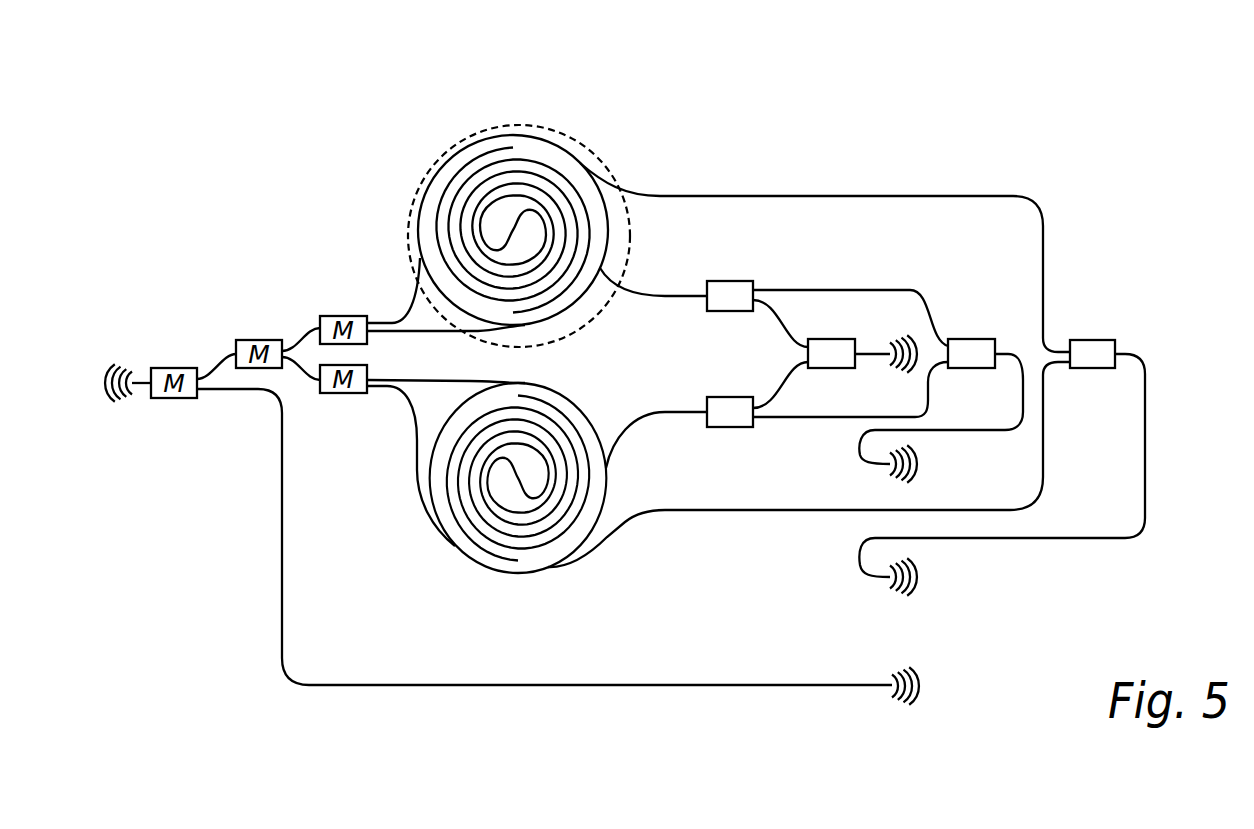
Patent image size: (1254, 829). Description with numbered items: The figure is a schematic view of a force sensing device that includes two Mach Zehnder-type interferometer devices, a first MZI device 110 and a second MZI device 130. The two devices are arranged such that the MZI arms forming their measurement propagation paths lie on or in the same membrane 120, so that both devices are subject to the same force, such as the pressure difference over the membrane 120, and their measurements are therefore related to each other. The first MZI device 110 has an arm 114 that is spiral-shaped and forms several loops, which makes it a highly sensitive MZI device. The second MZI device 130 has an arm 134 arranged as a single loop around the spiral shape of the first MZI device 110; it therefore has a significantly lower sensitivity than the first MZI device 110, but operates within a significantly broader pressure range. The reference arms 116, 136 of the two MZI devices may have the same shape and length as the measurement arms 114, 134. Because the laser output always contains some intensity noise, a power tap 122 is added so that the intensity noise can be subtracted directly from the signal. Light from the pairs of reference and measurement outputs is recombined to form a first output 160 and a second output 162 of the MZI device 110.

The first MZI device 110 is at (718, 197).
The arm 114 is at (617, 197).
The reference arm 116 is at (583, 540).
The membrane 120 is at (573, 157).
The power tap 122 is at (900, 708).
The second MZI device 130 is at (790, 183).
The arm 134 is at (537, 128).
The reference arm 136 is at (462, 560).
The first output 160 is at (900, 333).
The second output 162 is at (903, 490).